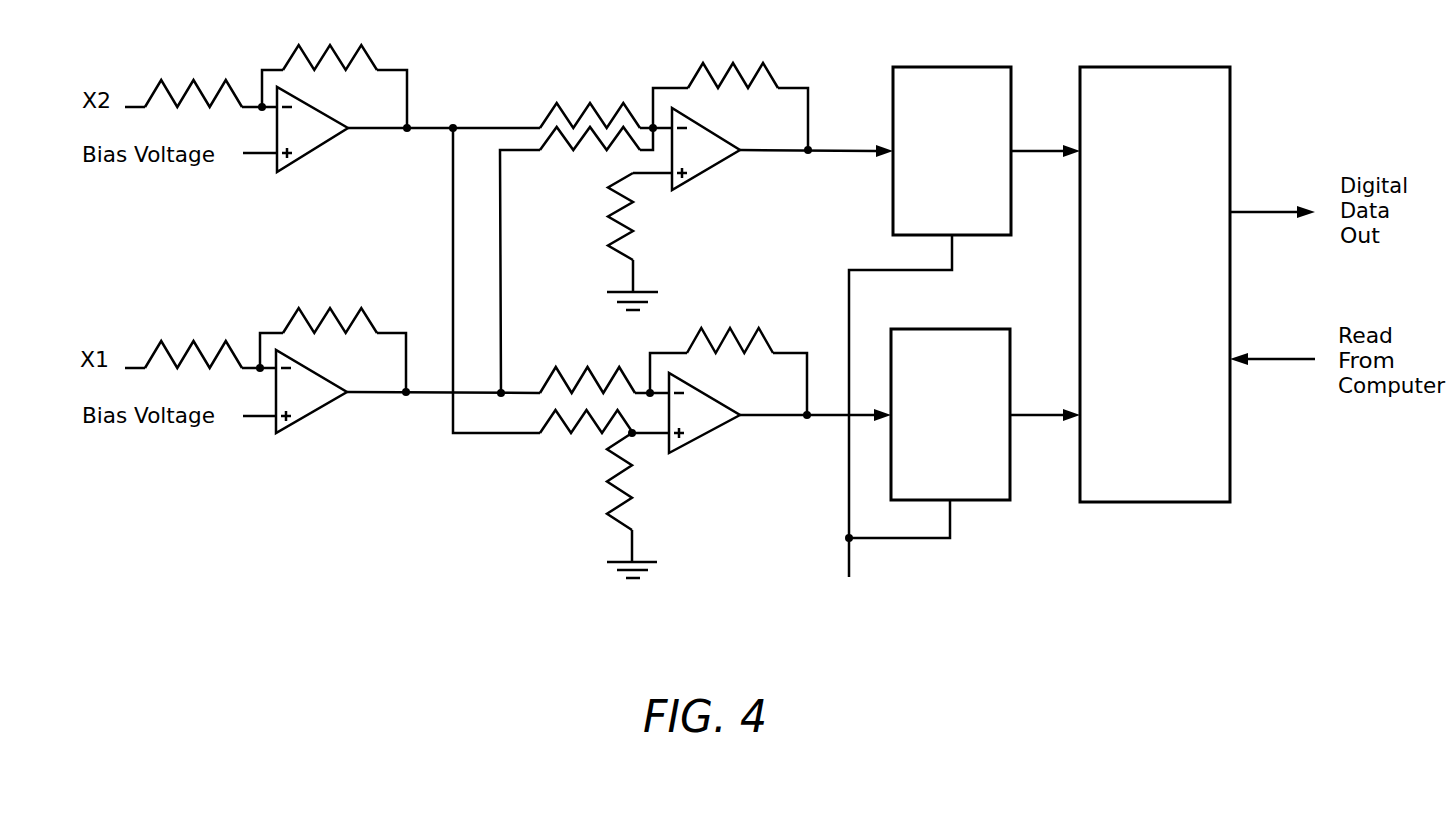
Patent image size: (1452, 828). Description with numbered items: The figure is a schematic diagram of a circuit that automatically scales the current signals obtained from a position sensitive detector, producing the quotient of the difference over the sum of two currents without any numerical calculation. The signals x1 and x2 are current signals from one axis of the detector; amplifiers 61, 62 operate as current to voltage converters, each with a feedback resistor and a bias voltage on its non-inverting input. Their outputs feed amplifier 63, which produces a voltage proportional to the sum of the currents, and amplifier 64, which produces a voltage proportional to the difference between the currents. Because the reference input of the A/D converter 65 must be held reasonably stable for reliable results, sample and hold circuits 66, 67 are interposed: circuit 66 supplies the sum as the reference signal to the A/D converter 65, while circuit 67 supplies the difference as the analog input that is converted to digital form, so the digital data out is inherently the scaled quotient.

The amplifier 61 is at (305, 142).
The amplifier 62 is at (313, 398).
The amplifier 63 is at (715, 152).
The amplifier 64 is at (713, 413).
The A/D converter 65 is at (1217, 457).
The sample and hold circuit 66 is at (952, 72).
The sample and hold circuit 67 is at (970, 487).